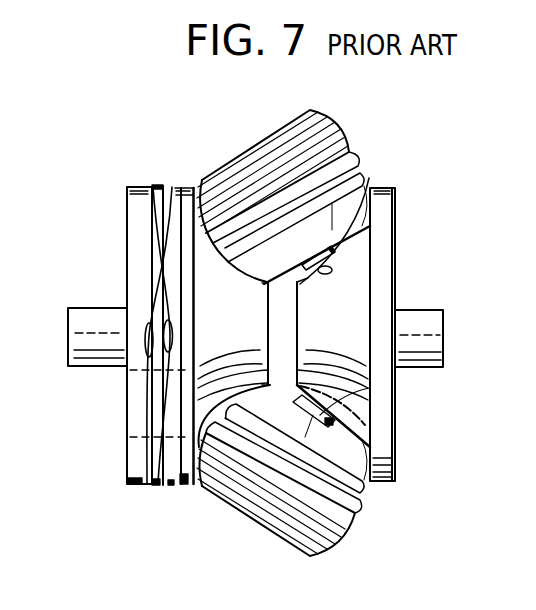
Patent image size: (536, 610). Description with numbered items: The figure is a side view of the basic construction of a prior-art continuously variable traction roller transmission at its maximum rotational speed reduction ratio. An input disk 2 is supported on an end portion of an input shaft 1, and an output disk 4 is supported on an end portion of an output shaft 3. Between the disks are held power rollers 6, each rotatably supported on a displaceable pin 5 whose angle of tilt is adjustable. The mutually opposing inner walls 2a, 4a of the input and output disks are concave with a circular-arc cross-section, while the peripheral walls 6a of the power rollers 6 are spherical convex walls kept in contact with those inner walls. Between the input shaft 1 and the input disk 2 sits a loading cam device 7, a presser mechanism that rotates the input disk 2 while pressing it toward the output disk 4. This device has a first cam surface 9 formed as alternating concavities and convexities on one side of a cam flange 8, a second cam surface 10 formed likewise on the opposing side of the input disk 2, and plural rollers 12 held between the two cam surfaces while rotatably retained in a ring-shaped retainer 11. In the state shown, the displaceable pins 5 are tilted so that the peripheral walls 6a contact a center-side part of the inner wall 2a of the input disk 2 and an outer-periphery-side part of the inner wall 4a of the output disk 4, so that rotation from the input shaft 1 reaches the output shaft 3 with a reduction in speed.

The input shaft 1 is at (68, 343).
The input disk 2 is at (186, 487).
The inner wall 2a is at (228, 500).
The output shaft 3 is at (433, 330).
The output disk 4 is at (379, 481).
The inner wall 4a is at (332, 270).
The displaceable pin 5 is at (338, 258).
The power roller 6 is at (368, 229).
The peripheral wall 6a is at (396, 203).
The loading cam device 7 is at (160, 487).
The cam flange 8 is at (128, 463).
The first cam surface 9 is at (150, 368).
The second cam surface 10 is at (170, 293).
The ring-shaped retainer 11 is at (158, 240).
The roller 12 is at (152, 188).